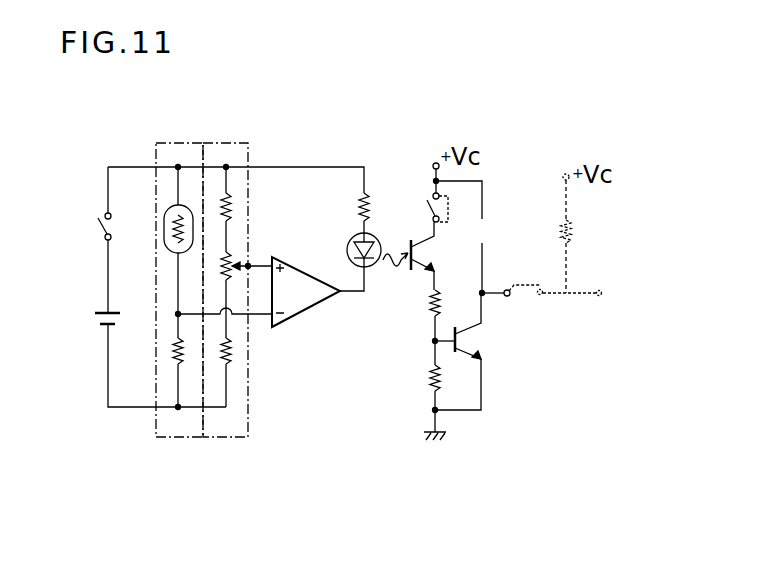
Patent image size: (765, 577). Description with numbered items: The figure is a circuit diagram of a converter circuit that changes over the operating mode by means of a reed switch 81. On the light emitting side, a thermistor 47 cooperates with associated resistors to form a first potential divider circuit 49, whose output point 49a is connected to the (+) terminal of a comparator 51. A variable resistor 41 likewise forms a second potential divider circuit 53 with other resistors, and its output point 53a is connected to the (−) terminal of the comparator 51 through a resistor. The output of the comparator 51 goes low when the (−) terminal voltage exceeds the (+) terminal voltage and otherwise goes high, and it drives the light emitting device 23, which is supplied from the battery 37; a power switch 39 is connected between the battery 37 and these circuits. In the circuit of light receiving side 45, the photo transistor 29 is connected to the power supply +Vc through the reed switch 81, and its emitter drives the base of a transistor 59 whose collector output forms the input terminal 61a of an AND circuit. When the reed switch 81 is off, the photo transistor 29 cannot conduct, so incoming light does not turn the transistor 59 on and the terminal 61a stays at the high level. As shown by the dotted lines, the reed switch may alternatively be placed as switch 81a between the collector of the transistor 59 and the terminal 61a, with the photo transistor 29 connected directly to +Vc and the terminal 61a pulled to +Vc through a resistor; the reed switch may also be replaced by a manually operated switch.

The light emitting device 23 is at (372, 272).
The photo transistor 29 is at (426, 266).
The battery 37 is at (94, 316).
The power switch 39 is at (101, 230).
The variable resistor 41 is at (228, 256).
The circuit of light receiving side 45 is at (550, 397).
The thermistor 47 is at (165, 222).
The first potential divider circuit 49 is at (176, 143).
The output point 49a is at (174, 318).
The comparator 51 is at (308, 312).
The second potential divider circuit 53 is at (233, 143).
The output point 53a is at (249, 263).
The transistor 59 is at (452, 346).
The input terminal 61a is at (603, 291).
The reed switch 81 is at (428, 205).
The reed switch 81a is at (514, 283).